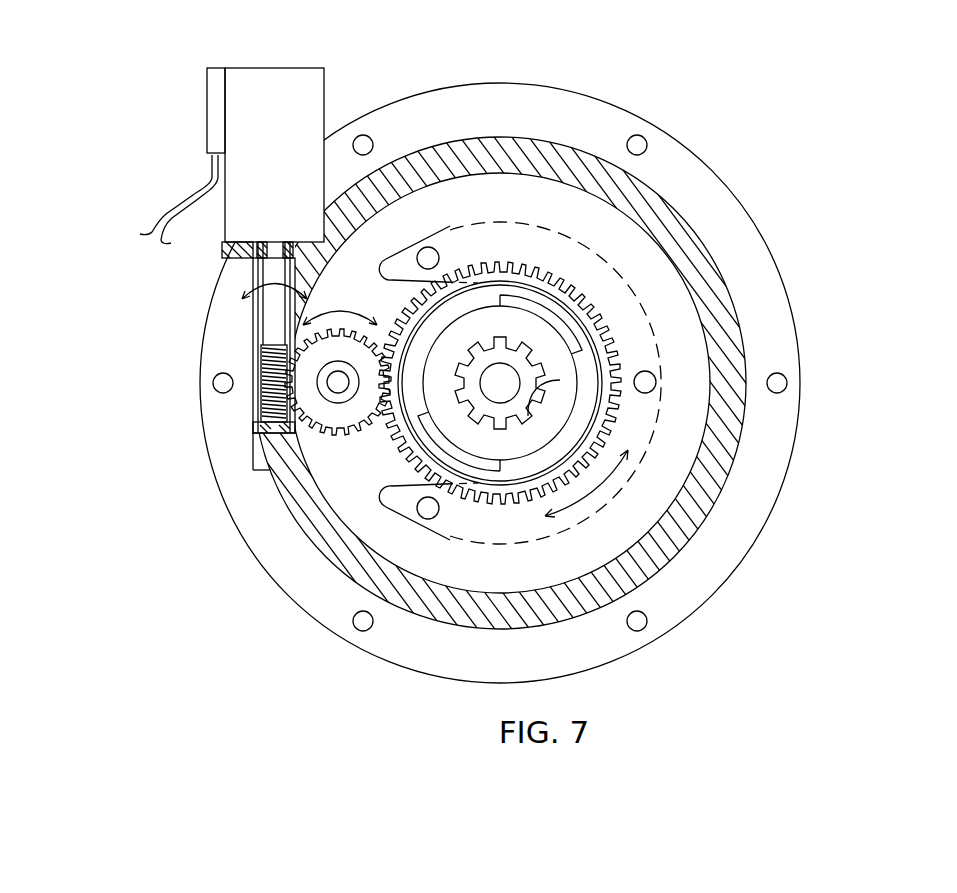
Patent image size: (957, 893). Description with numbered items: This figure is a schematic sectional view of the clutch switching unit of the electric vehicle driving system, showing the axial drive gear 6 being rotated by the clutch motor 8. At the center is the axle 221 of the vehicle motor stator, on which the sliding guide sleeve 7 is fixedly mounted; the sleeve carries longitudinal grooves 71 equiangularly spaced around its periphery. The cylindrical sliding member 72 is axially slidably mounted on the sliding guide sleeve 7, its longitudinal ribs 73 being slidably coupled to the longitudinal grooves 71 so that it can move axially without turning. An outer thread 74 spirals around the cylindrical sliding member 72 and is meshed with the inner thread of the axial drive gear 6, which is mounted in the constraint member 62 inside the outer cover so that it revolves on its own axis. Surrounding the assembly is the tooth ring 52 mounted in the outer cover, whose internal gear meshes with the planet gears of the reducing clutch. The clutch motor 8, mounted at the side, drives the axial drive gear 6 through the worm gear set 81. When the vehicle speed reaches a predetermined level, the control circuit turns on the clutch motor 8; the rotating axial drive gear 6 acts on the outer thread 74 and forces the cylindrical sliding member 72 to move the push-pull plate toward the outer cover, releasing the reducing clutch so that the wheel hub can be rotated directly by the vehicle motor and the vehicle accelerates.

The axial drive gear 6 is at (578, 310).
The sliding guide sleeve 7 is at (527, 373).
The clutch motor 8 is at (243, 110).
The tooth ring 52 is at (723, 222).
The constraint member 62 is at (657, 435).
The longitudinal grooves 71 is at (474, 418).
The cylindrical sliding member 72 is at (527, 437).
The longitudinal ribs 73 is at (560, 380).
The outer thread 74 is at (537, 307).
The worm gear set 81 is at (317, 427).
The axle 221 is at (494, 375).